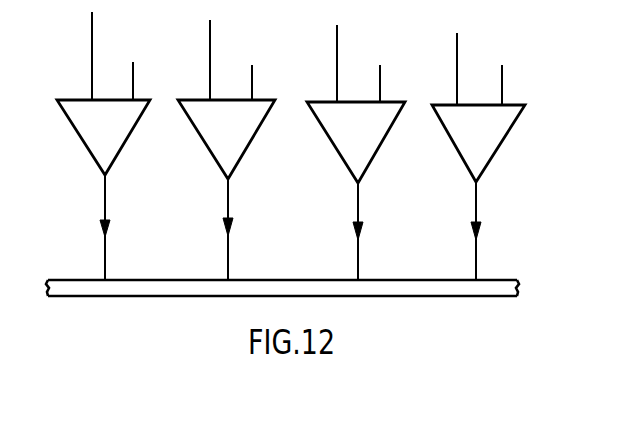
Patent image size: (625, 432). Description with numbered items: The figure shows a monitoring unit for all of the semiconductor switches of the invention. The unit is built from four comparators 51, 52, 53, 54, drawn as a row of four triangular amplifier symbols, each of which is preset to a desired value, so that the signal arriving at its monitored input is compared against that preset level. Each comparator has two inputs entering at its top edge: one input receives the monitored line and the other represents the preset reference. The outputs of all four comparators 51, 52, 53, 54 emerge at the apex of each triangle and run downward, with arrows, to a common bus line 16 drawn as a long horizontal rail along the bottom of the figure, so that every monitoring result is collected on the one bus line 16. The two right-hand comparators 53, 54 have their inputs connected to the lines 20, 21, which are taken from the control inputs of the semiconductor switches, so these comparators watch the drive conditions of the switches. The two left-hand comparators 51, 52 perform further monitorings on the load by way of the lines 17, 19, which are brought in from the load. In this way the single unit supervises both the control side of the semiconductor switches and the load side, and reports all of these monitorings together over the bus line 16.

The bus line 16 is at (158, 280).
The line 17 is at (92, 31).
The line 19 is at (210, 29).
The line 20 is at (337, 35).
The line 21 is at (457, 40).
The comparator 51 is at (82, 141).
The comparator 52 is at (213, 155).
The comparator 53 is at (342, 157).
The comparator 54 is at (459, 153).